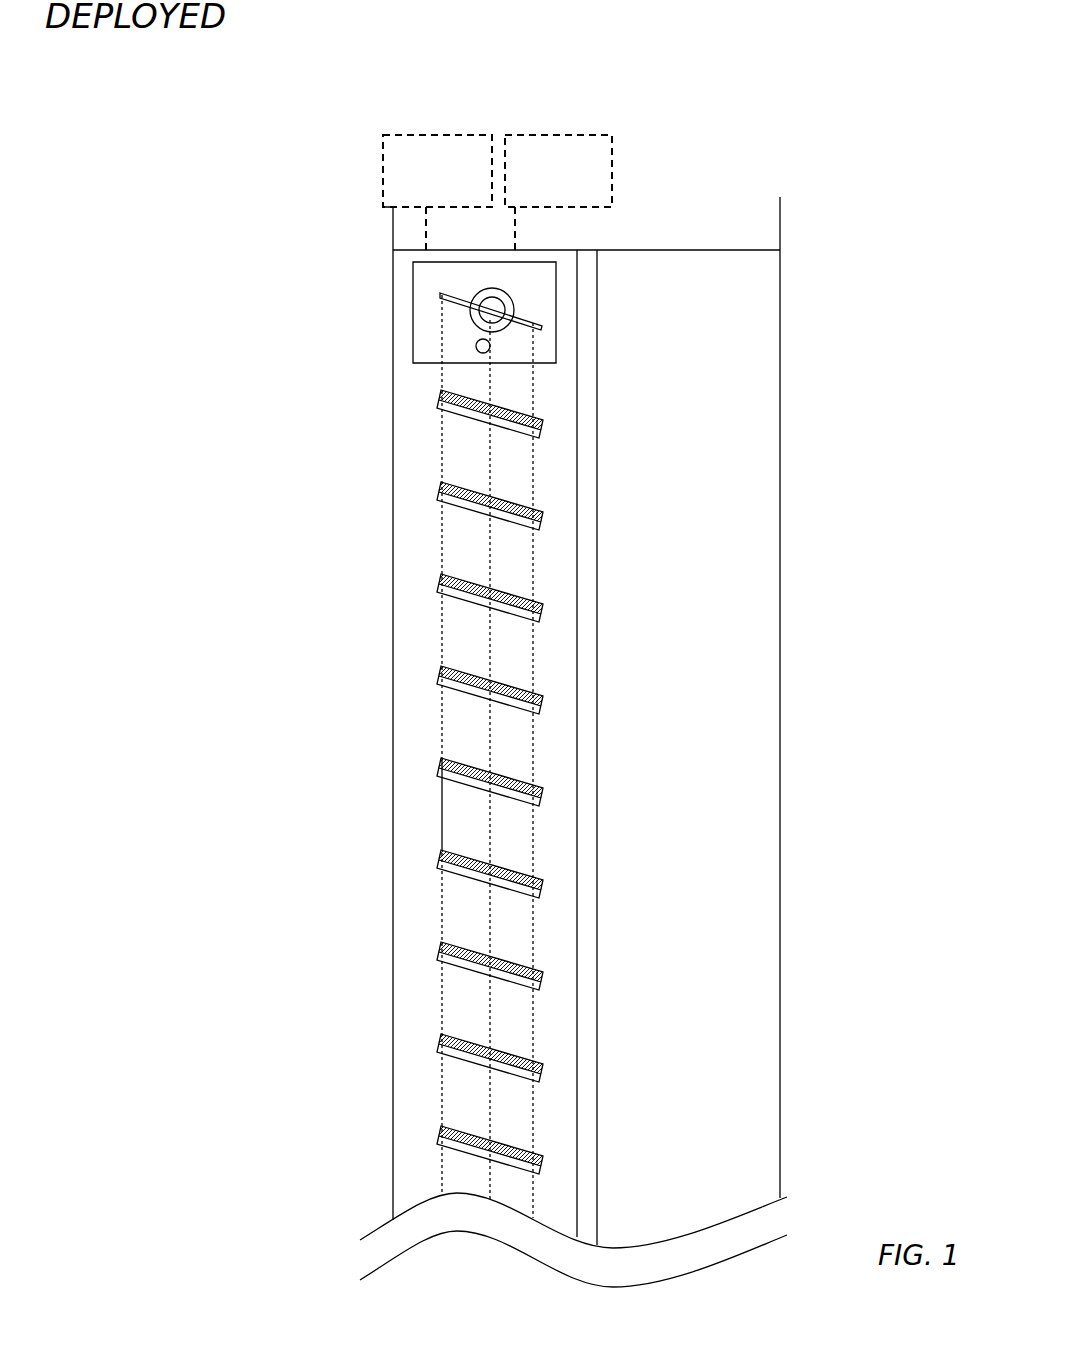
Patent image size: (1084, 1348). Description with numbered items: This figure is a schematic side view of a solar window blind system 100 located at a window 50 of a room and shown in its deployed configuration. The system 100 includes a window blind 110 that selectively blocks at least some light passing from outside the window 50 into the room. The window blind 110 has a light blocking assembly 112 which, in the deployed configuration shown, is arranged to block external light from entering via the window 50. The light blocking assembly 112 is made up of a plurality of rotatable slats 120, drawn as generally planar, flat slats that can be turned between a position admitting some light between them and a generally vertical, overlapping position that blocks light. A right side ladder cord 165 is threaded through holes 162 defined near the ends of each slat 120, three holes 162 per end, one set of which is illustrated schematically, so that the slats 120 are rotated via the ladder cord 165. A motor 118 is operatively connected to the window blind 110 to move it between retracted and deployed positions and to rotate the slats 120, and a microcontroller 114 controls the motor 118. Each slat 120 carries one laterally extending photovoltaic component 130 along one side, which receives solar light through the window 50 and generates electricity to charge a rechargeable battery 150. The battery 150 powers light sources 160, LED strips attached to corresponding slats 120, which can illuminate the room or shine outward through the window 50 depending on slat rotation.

The solar window blind system 100 is at (262, 197).
The window blind 110 is at (396, 328).
The light blocking assembly 112 is at (558, 405).
The microcontroller 114 is at (437, 192).
The motor 118 is at (515, 296).
The rotatable slats 120 is at (542, 1155).
The photovoltaic components 130 is at (545, 600).
The rechargeable battery 150 is at (558, 192).
The light sources 160 is at (438, 660).
The holes 162 is at (533, 708).
The ladder cord 165 is at (440, 798).
The window 50 is at (588, 708).